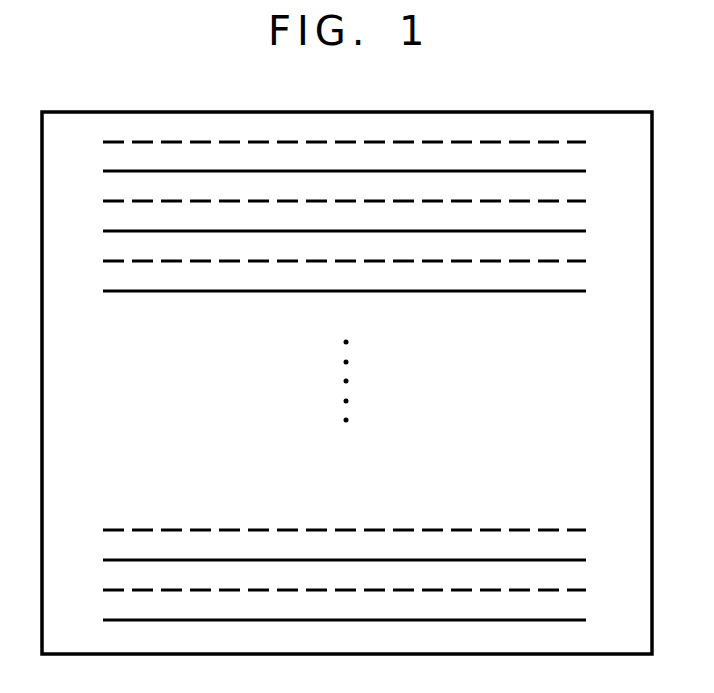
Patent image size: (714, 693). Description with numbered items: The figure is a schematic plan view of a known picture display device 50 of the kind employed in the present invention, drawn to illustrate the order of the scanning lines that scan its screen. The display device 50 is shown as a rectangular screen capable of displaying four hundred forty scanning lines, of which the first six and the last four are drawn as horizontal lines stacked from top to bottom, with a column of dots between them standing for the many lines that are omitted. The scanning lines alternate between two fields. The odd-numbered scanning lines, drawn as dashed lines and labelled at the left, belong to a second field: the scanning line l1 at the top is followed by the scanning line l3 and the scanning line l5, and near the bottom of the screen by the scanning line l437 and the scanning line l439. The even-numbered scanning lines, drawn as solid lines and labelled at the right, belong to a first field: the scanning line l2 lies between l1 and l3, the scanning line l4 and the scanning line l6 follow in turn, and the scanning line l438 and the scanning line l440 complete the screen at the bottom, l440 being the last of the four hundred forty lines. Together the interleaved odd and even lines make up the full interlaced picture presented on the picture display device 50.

The picture display device 50 is at (598, 113).
The scanning line l1 is at (330, 143).
The scanning line l2 is at (360, 175).
The scanning line l3 is at (329, 203).
The scanning line l4 is at (360, 234).
The scanning line l5 is at (329, 263).
The scanning line l6 is at (360, 294).
The scanning line l437 is at (317, 532).
The scanning line l438 is at (371, 563).
The scanning line l439 is at (317, 592).
The scanning line l440 is at (371, 623).